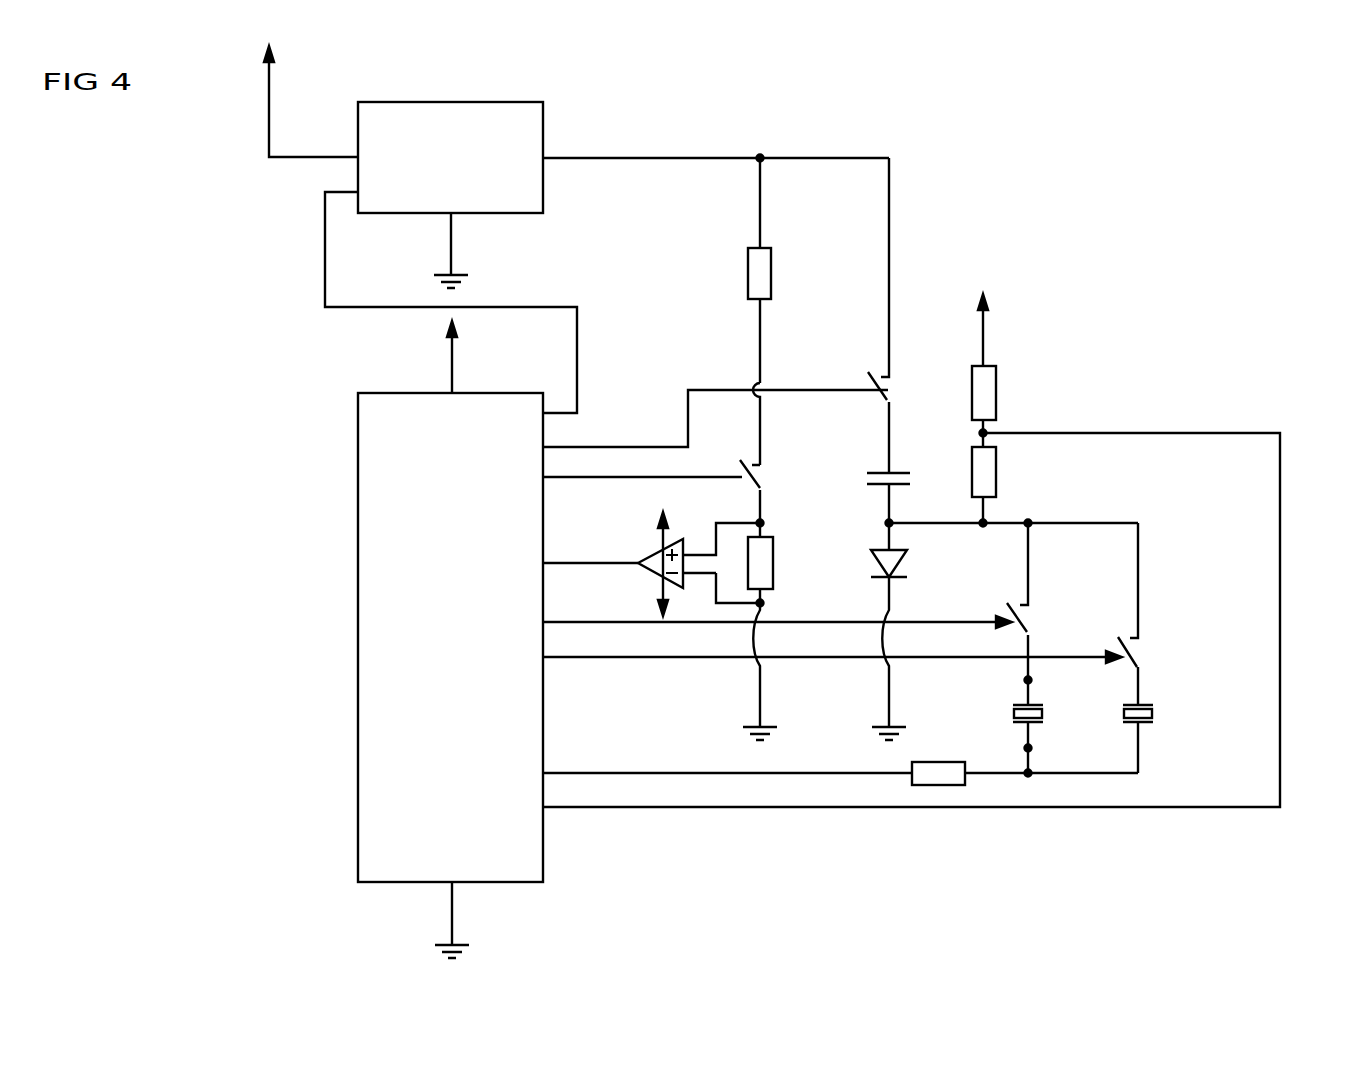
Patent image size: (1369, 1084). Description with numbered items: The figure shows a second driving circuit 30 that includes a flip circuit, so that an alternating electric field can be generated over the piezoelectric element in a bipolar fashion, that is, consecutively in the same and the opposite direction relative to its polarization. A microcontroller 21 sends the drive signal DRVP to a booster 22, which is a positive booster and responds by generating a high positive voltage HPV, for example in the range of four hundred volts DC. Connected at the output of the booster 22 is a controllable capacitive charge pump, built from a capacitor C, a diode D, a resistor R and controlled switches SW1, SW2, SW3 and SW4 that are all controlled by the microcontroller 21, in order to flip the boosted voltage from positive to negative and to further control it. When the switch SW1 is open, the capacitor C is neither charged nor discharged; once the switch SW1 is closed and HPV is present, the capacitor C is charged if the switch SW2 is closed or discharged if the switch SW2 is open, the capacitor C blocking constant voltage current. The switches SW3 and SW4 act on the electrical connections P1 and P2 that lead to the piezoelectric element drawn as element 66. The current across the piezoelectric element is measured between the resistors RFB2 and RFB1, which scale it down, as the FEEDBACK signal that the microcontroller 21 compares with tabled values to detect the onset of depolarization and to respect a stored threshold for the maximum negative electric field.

The driving circuit 30 is at (1358, 627).
The microcontroller 21 is at (358, 606).
The booster 22 is at (543, 124).
The resistor R is at (771, 272).
The capacitor C is at (878, 470).
The diode D is at (870, 565).
The controlled switch SW1 is at (889, 400).
The controlled switch SW2 is at (762, 487).
The controlled switch SW3 is at (1032, 630).
The controlled switch SW4 is at (1140, 660).
The resistor RFB1 is at (996, 392).
The resistor RFB2 is at (996, 470).
The electrical connection P1 is at (1026, 680).
The electrical connection P2 is at (1026, 748).
The piezoelectric element 66 is at (1045, 712).